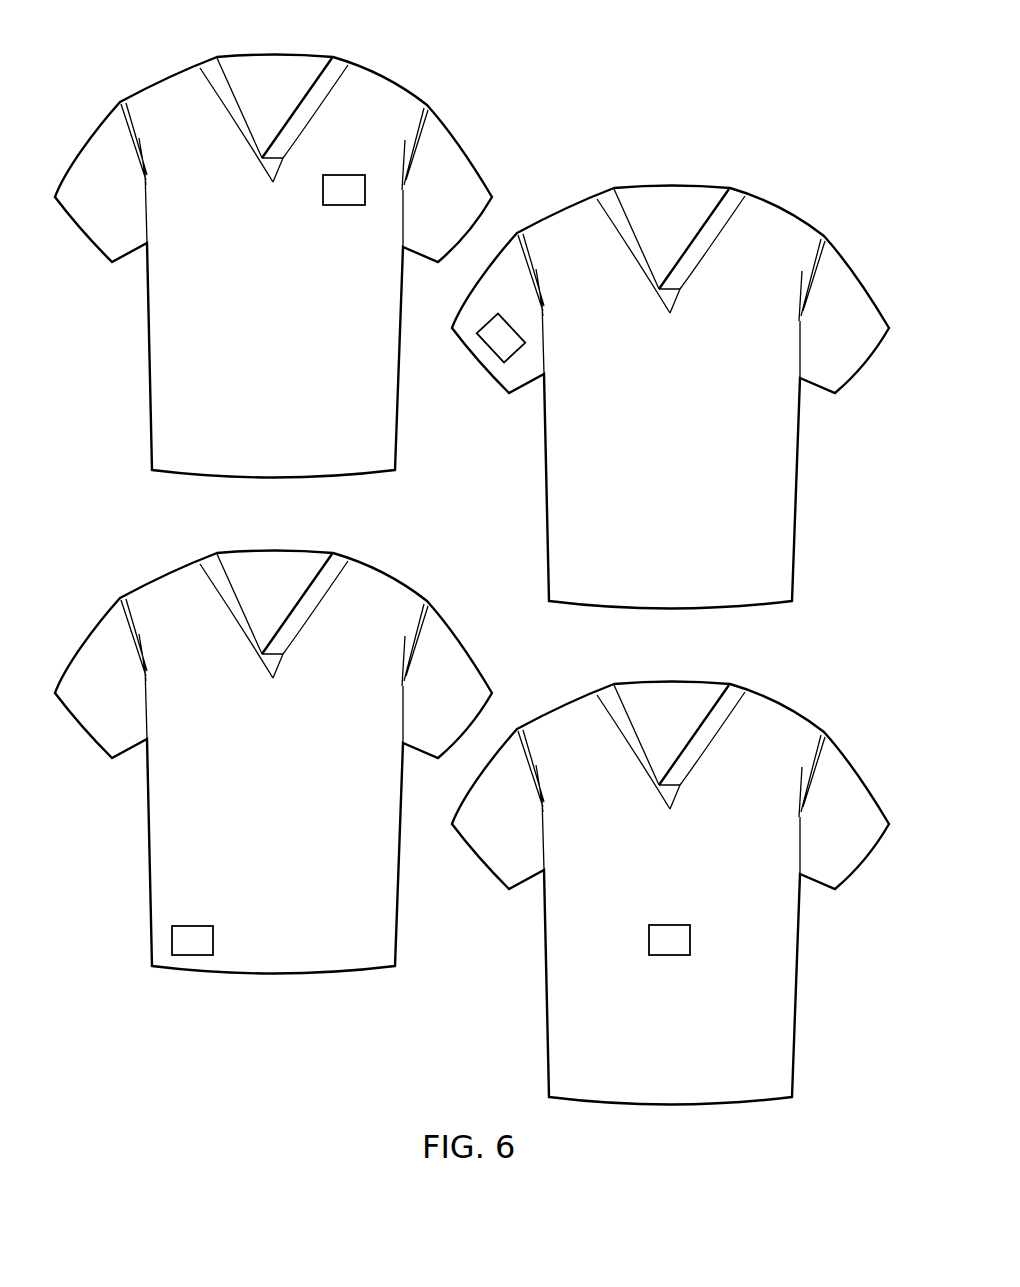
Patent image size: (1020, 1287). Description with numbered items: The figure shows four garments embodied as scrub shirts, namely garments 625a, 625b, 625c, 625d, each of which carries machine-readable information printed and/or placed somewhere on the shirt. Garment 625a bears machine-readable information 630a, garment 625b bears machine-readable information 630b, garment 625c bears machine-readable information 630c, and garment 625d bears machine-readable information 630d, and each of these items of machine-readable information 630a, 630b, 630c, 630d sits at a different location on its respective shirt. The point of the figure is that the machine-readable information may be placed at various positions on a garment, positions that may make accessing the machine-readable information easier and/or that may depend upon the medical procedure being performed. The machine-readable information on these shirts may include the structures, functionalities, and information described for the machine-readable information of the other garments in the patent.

The garment 625a is at (266, 55).
The garment 625b is at (672, 187).
The garment 625c is at (272, 552).
The garment 625d is at (670, 682).
The machine-readable information 630a is at (343, 207).
The machine-readable information 630b is at (484, 352).
The machine-readable information 630c is at (214, 940).
The machine-readable information 630d is at (668, 957).